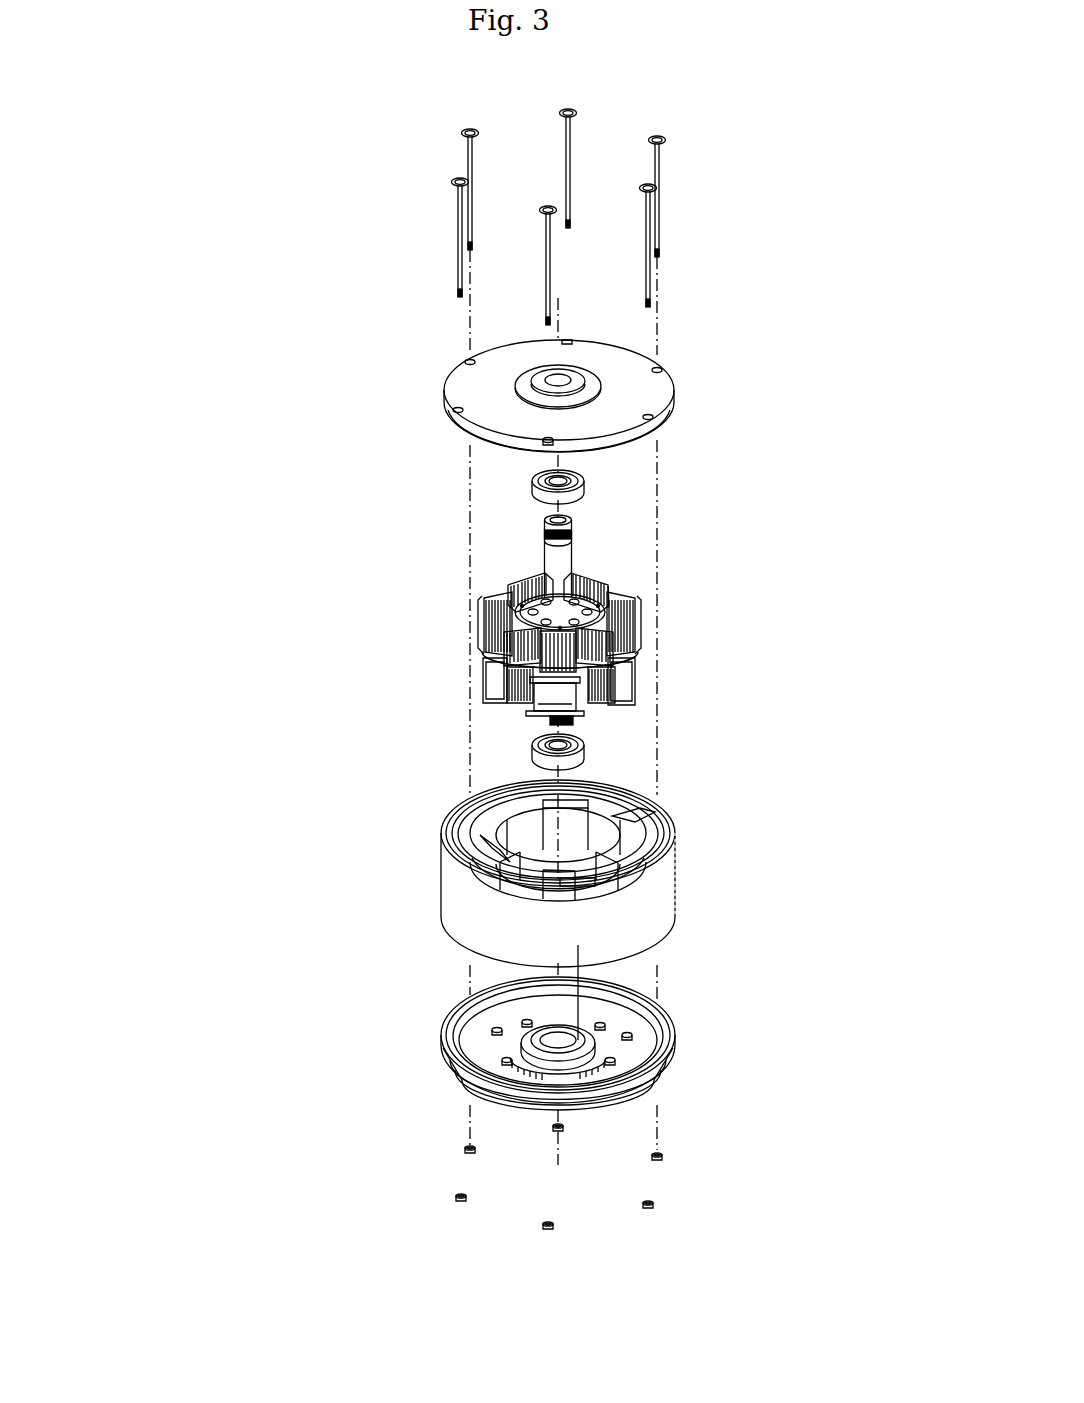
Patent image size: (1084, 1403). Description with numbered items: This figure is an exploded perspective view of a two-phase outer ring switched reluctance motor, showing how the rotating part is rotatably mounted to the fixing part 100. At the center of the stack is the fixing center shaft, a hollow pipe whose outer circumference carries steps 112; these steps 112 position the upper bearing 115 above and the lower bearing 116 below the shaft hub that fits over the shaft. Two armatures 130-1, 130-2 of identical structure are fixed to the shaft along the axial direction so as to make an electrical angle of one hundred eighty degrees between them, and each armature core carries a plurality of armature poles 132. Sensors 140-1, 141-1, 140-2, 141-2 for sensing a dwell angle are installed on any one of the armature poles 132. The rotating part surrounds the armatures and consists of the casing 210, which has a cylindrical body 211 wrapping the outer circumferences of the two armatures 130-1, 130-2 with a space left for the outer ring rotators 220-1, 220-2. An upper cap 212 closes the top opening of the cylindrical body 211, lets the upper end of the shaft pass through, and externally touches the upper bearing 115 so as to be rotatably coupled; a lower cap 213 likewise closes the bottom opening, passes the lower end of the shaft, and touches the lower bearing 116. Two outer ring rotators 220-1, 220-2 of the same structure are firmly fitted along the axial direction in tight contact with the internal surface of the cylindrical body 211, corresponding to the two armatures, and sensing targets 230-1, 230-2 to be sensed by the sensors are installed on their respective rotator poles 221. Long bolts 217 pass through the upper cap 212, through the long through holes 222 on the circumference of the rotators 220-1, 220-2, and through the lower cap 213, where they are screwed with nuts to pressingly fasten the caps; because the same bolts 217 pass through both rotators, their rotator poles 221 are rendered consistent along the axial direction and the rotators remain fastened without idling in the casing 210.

The fixing part 100 is at (647, 633).
The steps 112 is at (578, 592).
The upper bearing 115 is at (585, 495).
The lower bearing 116 is at (585, 760).
The armature 130-1 is at (513, 653).
The armature 130-2 is at (488, 678).
The armature poles 132 is at (461, 666).
The sensor 140-1 is at (485, 620).
The sensor 140-2 is at (557, 713).
The sensor 141-1 is at (485, 598).
The sensor 141-2 is at (537, 692).
The casing 210 is at (187, 755).
The cylindrical body 211 is at (441, 888).
The upper cap 212 is at (445, 395).
The lower cap 213 is at (441, 1048).
The long bolts 217 is at (466, 162).
The outer ring rotator 220-1 is at (657, 815).
The outer ring rotator 220-2 is at (603, 885).
The rotator poles 221 is at (717, 872).
The long through holes 222 is at (460, 803).
The sensing target 230-1 is at (577, 817).
The sensing target 230-2 is at (573, 858).